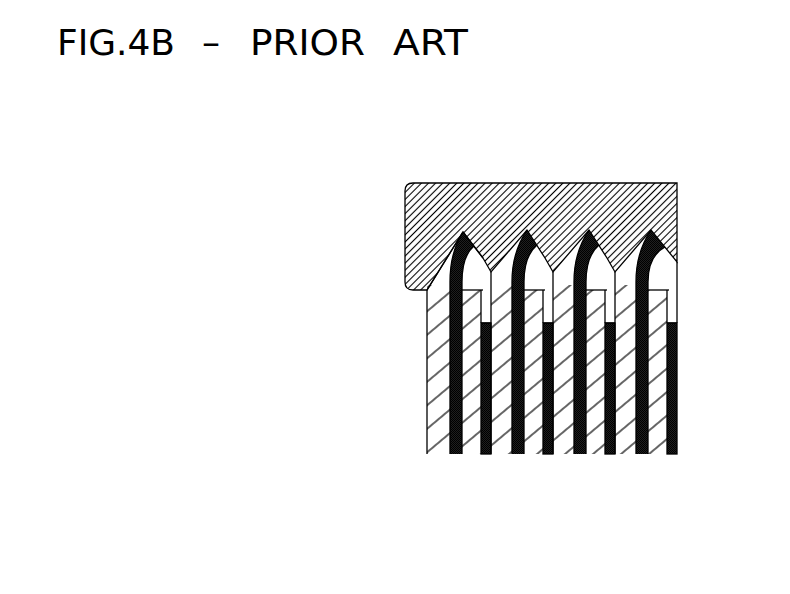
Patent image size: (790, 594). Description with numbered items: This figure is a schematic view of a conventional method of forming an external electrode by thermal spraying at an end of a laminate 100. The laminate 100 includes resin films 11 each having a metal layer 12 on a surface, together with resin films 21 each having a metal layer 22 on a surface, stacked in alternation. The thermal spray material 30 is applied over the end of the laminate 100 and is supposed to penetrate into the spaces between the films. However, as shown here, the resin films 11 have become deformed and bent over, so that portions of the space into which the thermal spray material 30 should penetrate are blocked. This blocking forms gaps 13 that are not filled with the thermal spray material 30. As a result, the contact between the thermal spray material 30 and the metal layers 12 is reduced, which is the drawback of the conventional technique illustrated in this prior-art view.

The thermal spray material 30 is at (422, 224).
The resin film 11 is at (458, 237).
The metal layer 12 is at (479, 278).
The gap 13 is at (541, 270).
The resin film 21 is at (468, 442).
The metal layer 22 is at (485, 442).
The laminate 100 is at (546, 330).